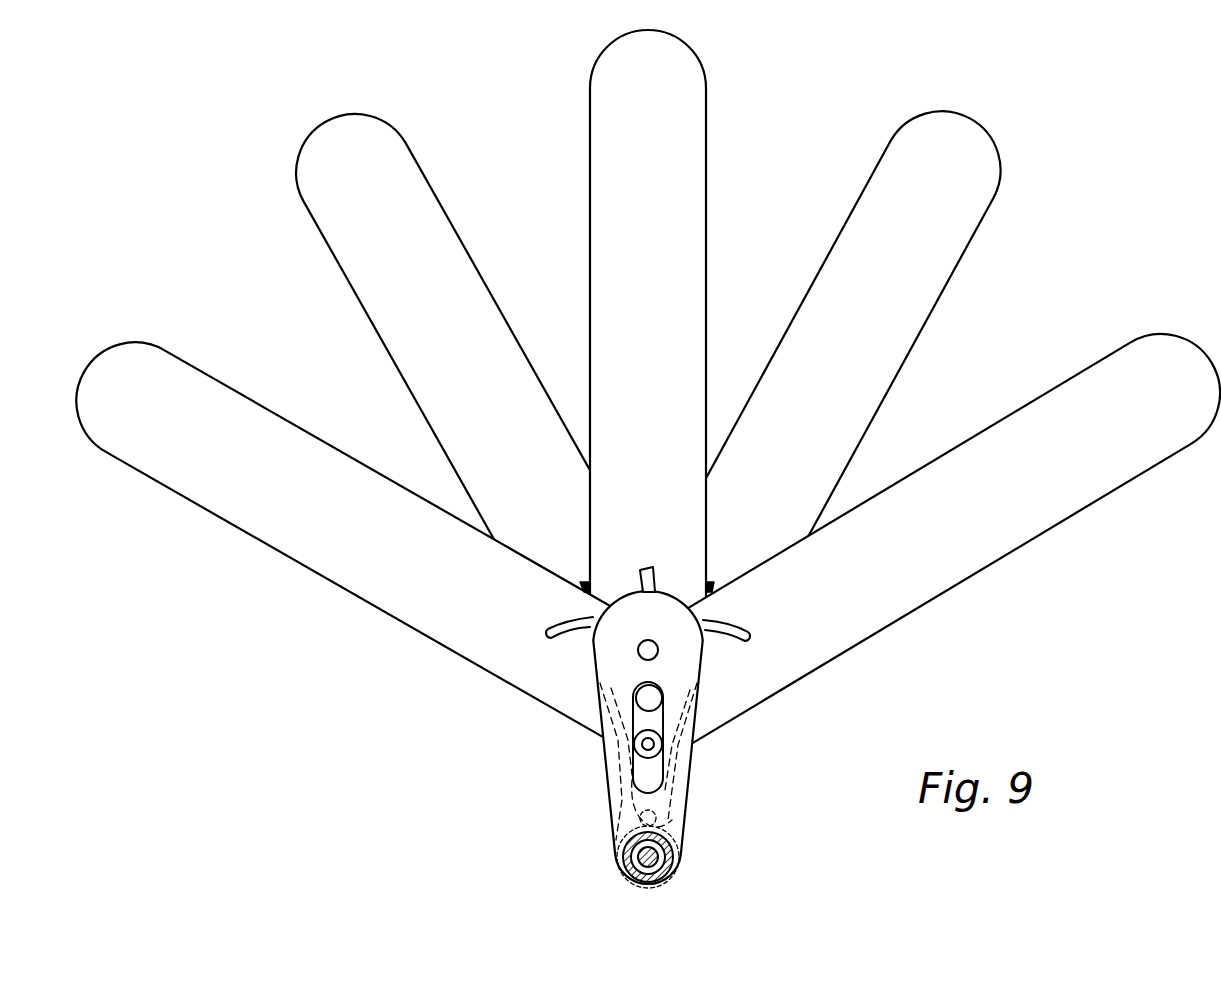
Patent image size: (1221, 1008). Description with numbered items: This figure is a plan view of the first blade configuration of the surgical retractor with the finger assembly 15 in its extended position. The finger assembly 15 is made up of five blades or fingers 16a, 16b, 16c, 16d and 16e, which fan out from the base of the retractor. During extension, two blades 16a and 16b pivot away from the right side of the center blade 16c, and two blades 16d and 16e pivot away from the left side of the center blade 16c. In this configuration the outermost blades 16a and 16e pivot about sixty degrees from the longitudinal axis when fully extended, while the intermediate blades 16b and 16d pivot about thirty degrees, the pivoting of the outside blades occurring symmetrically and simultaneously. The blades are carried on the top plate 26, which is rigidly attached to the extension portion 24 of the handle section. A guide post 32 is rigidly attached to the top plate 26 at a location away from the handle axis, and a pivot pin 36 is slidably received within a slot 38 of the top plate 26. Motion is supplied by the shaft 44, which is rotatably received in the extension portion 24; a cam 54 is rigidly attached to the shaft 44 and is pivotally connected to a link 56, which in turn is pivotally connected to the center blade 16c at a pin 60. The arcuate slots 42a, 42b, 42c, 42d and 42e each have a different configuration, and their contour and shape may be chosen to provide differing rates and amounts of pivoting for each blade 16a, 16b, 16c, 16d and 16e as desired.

The finger assembly 15 is at (243, 273).
The blade 16a is at (1073, 517).
The blade 16b is at (945, 283).
The center blade 16c is at (707, 161).
The blade 16d is at (444, 212).
The blade 16e is at (250, 400).
The extension portion 24 is at (628, 872).
The top plate 26 is at (672, 795).
The guide post 32 is at (638, 651).
The pivot pin 36 is at (660, 697).
The slot 38 is at (657, 773).
The arcuate slot 42a is at (740, 628).
The arcuate slot 42b is at (713, 581).
The arcuate slot 42c is at (643, 568).
The arcuate slot 42d is at (580, 580).
The arcuate slot 42e is at (548, 624).
The shaft 44 is at (670, 858).
The cam 54 is at (623, 825).
The link 56 is at (620, 805).
The pin 60 is at (641, 745).